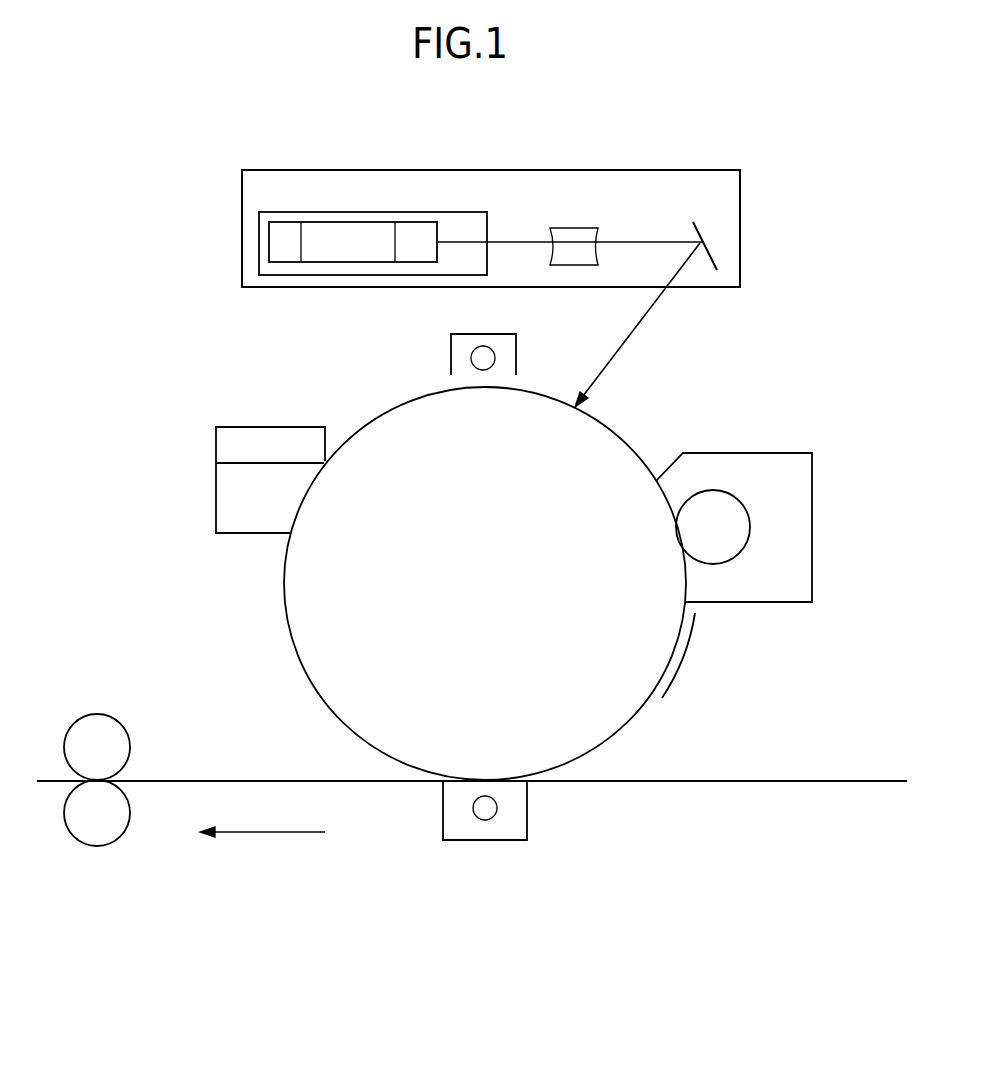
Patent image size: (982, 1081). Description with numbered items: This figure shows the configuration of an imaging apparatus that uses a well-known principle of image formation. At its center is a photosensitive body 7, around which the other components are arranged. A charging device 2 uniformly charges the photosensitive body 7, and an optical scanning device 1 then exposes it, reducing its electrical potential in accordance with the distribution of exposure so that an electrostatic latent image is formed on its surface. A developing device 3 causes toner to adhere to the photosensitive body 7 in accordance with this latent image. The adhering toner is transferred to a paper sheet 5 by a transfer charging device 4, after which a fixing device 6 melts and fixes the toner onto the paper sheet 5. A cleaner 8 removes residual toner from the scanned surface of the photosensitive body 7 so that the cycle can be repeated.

The optical scanning device 1 is at (242, 255).
The charging device 2 is at (452, 352).
The developing device 3 is at (812, 585).
The transfer charging device 4 is at (527, 838).
The paper sheet 5 is at (723, 781).
The fixing device 6 is at (98, 845).
The photosensitive body 7 is at (283, 612).
The cleaner 8 is at (217, 472).